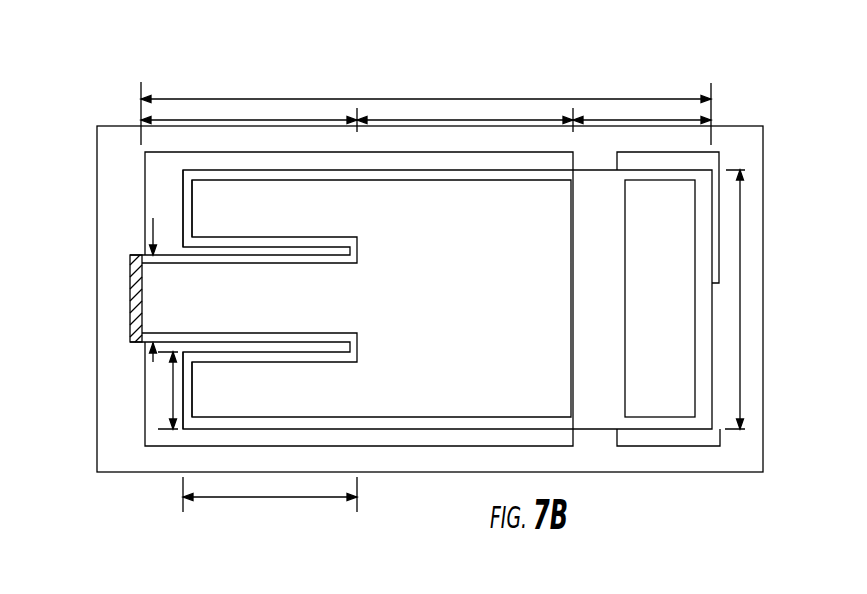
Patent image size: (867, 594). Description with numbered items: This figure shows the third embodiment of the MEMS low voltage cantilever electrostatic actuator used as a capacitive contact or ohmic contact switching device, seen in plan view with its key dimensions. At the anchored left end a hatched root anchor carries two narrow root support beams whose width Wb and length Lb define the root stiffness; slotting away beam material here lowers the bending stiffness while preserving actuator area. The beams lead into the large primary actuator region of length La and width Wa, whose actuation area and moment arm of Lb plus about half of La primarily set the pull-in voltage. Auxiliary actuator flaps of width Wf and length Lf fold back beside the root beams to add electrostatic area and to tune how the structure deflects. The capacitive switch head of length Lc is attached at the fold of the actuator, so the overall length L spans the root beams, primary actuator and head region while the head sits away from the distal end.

The overall length L is at (426, 111).
The primary actuator length La is at (465, 115).
The root beam length Lb is at (249, 115).
The capacitive switch head length Lc is at (642, 111).
The auxiliary flap length Lf is at (270, 492).
The primary actuator width Wa is at (732, 299).
The root beam width Wb is at (155, 302).
The auxiliary flap width Wf is at (163, 390).